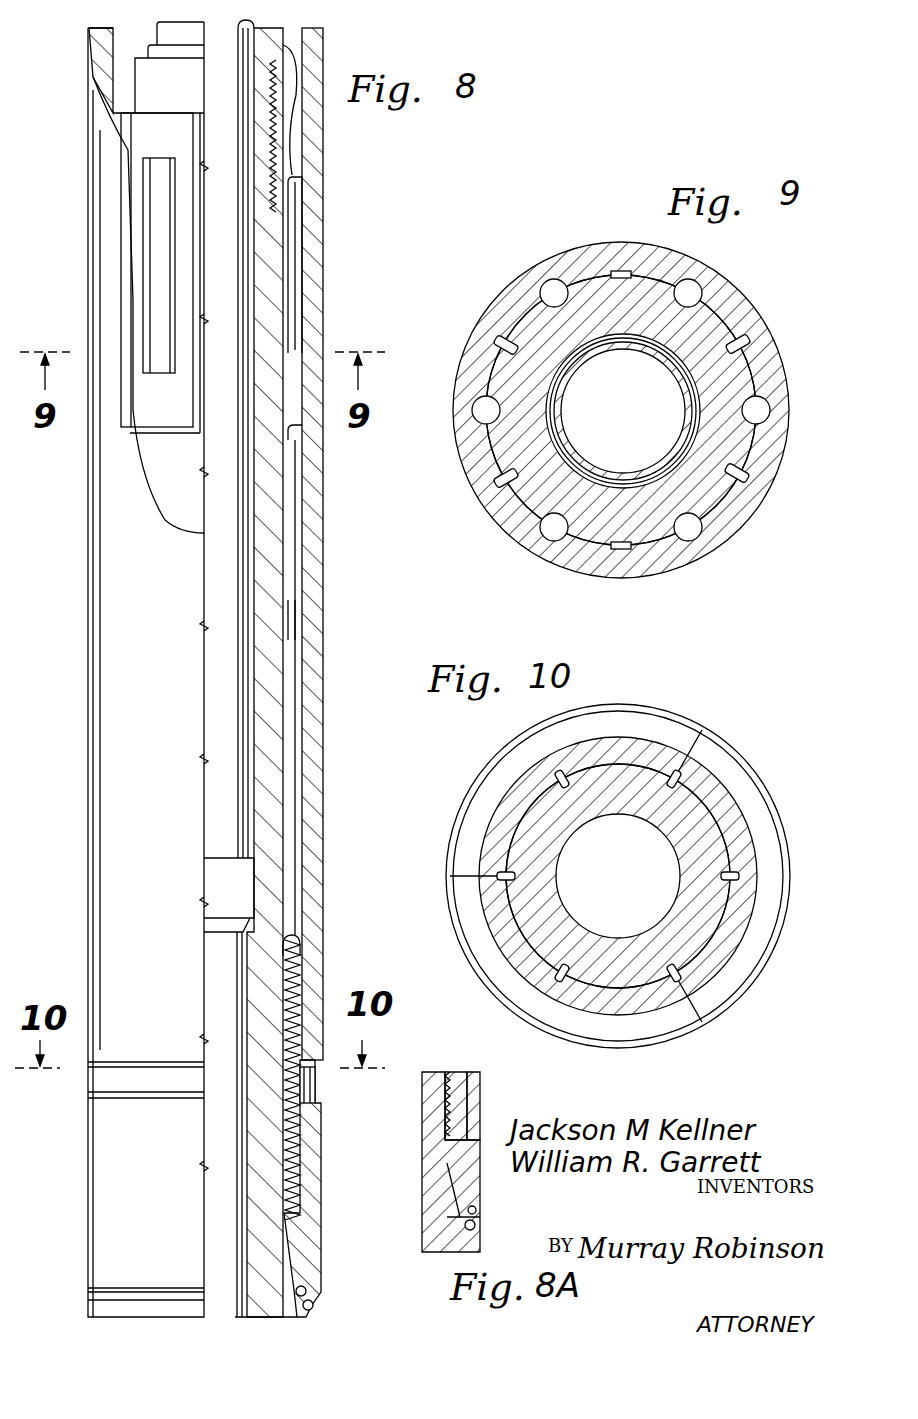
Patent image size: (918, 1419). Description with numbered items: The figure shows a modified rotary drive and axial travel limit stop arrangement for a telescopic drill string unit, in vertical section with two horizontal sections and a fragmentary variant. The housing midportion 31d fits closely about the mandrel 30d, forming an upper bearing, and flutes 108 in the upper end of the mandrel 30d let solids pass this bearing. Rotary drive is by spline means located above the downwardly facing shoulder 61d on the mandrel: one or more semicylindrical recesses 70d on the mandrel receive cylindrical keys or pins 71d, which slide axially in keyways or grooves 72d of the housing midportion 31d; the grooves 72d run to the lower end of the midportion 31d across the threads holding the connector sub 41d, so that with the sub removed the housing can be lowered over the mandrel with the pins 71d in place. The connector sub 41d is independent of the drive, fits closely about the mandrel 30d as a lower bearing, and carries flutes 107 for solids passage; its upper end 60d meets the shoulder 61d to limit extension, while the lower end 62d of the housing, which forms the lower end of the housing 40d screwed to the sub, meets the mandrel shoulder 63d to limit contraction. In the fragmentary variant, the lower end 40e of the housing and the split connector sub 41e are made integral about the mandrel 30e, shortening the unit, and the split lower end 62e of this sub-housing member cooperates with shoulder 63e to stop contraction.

In FIG. 8, the mandrel 30d is at (283, 152).
In FIG. 9, the mandrel 30d is at (541, 367).
In FIG. 10, the mandrel 30d is at (540, 907).
In FIG. 8, the midportion of the housing 31d is at (315, 256).
In FIG. 9, the midportion of the housing 31d is at (495, 313).
In FIG. 8, the semicylindrical recesses 70d is at (155, 205).
In FIG. 9, the semicylindrical recesses 70d is at (701, 319).
In FIG. 8, the cylindrical keys or pins 71d is at (300, 218).
In FIG. 9, the cylindrical keys or pins 71d is at (543, 283).
In FIG. 8, the keyways or grooves 72d is at (303, 614).
In FIG. 9, the keyways or grooves 72d is at (551, 549).
In FIG. 8, the flutes 108 is at (200, 132).
In FIG. 9, the flutes 108 is at (734, 474).
In FIG. 8, the downwardly facing shoulder 61d is at (289, 430).
In FIG. 8, the upper end of the sub 60d is at (292, 950).
In FIG. 8, the connector sub 41d is at (303, 1087).
In FIG. 10, the connector sub 41d is at (520, 802).
In FIG. 8, the nut 40d is at (310, 1236).
In FIG. 8, the lower end of the housing 62d is at (307, 1290).
In FIG. 8, the mandrel shoulder 63d is at (314, 1307).
In FIG. 8A, the connector sub 41e is at (433, 1075).
In FIG. 8A, the mandrel 30e is at (475, 1085).
In FIG. 8A, the lower end of the housing 40e is at (473, 1182).
In FIG. 8A, the split lower end 62e is at (477, 1210).
In FIG. 8A, the shoulder 63e is at (476, 1230).
In FIG. 10, the flutes 107 is at (753, 868).